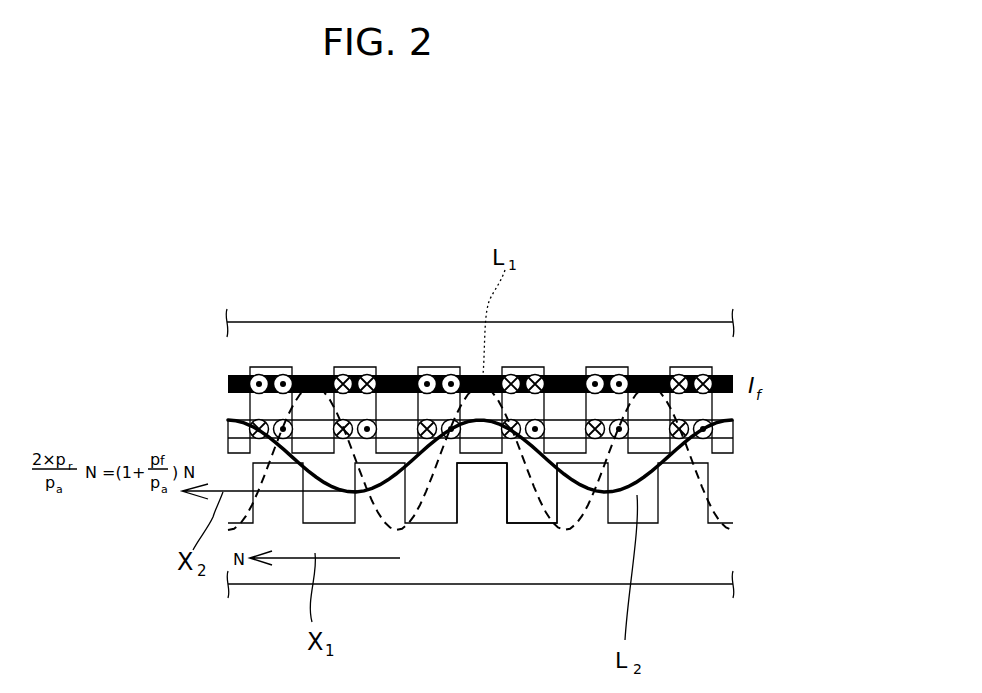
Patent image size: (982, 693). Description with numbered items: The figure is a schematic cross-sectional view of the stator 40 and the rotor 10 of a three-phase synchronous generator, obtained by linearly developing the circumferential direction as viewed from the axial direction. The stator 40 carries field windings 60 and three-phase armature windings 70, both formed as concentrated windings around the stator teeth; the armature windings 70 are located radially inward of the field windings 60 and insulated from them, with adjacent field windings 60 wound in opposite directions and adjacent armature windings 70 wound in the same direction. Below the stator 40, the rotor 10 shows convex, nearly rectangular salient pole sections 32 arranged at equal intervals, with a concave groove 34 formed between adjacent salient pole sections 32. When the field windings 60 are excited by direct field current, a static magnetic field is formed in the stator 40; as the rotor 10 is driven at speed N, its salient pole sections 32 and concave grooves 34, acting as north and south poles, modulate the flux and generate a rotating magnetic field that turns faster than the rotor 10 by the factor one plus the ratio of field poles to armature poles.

The rotor 10 is at (720, 570).
The salient pole section 32 is at (470, 508).
The concave groove 34 is at (532, 508).
The stator 40 is at (351, 330).
The field windings 60 is at (228, 386).
The three-phase armature windings 70 is at (228, 433).